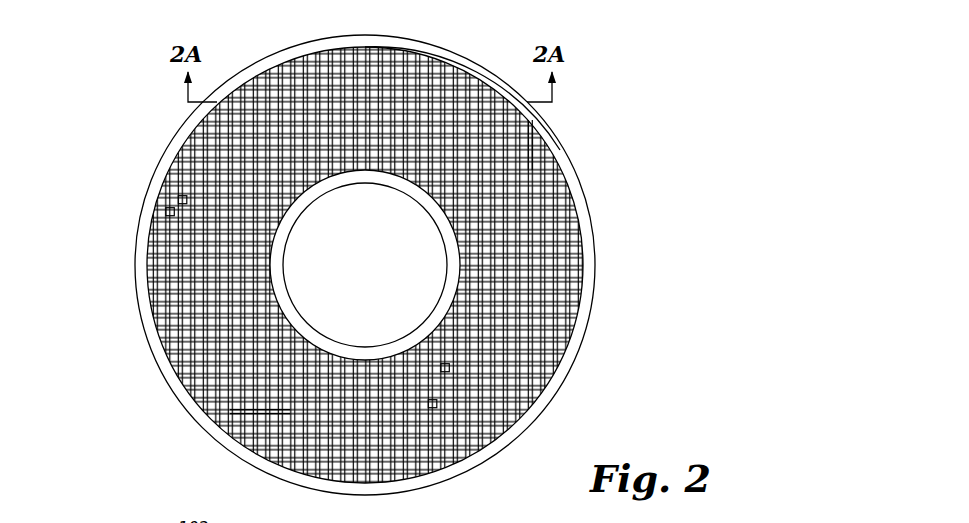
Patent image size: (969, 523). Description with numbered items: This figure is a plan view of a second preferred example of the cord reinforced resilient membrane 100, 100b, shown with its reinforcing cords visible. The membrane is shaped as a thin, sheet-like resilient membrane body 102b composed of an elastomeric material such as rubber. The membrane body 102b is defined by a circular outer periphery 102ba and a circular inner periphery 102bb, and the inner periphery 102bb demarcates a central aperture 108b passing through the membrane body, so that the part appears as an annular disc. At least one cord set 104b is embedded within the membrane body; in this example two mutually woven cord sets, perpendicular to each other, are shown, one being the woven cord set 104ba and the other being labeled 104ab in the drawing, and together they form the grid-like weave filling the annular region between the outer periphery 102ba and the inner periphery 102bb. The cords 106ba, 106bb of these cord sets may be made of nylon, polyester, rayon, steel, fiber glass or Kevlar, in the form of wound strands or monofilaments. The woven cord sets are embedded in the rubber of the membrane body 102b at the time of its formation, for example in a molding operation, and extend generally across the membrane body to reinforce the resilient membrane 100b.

The cord reinforced resilient membrane 100 is at (421, 265).
The cord reinforced resilient membrane 100b is at (598, 121).
The membrane body 102b is at (171, 129).
The circular outer periphery 102ba is at (570, 148).
The circular inner periphery 102bb is at (443, 289).
The cord set 104b is at (590, 263).
The first mesh strands 104ab is at (540, 150).
The woven cord set 104ba is at (247, 413).
The cords 106ba is at (430, 402).
The cords 106bb is at (190, 205).
The central aperture 108b is at (307, 305).